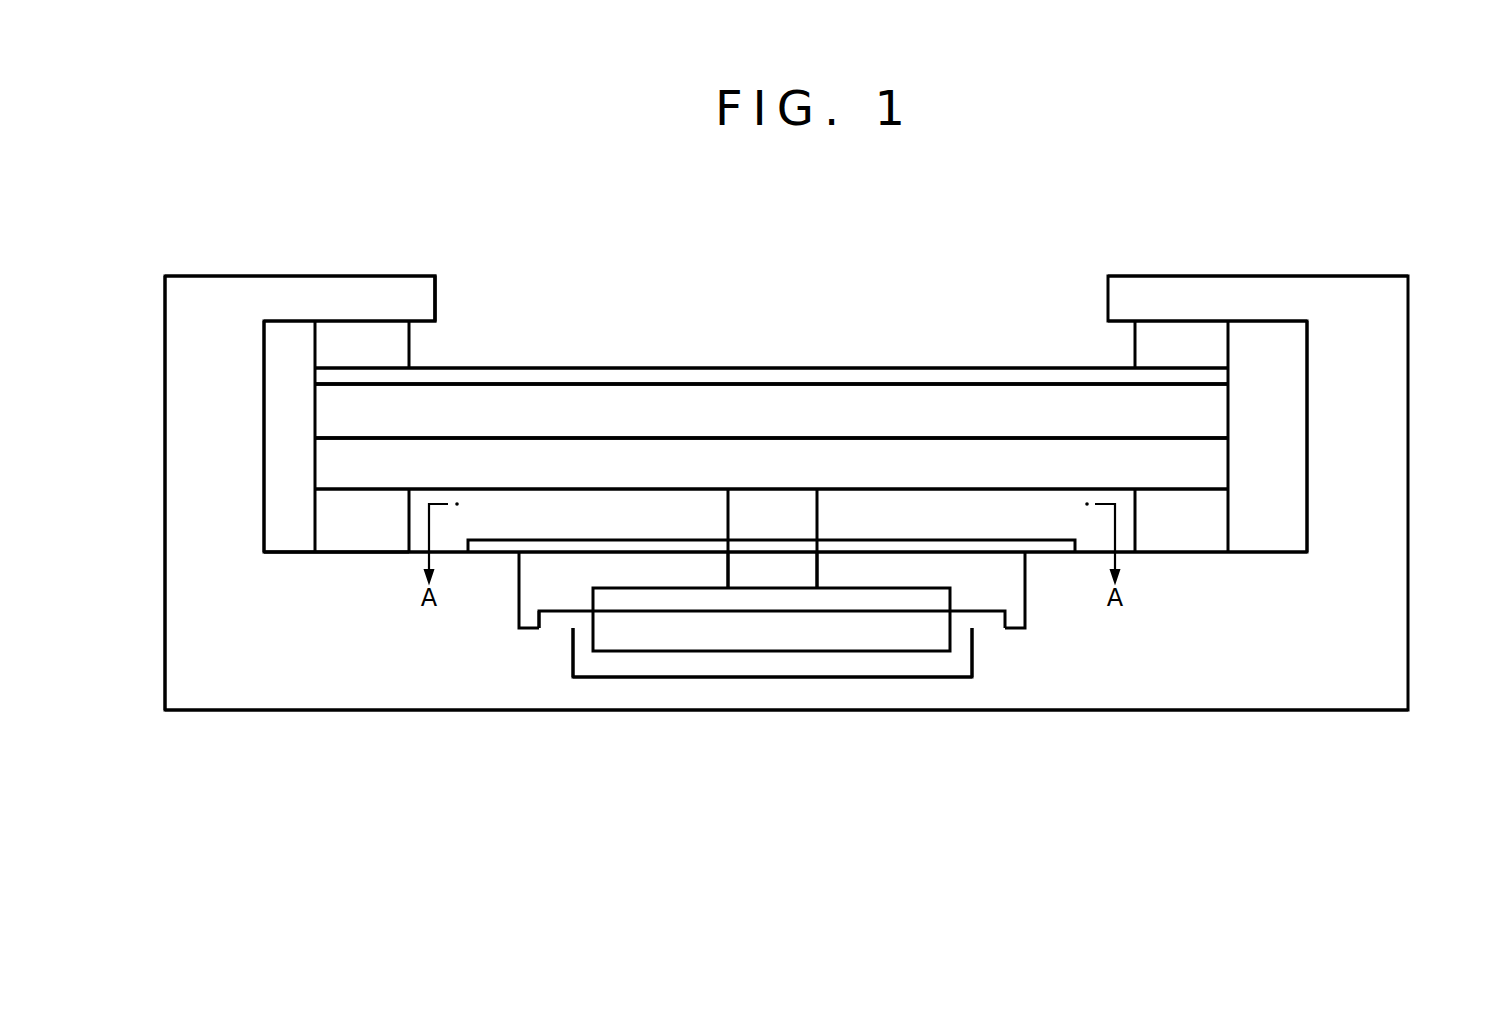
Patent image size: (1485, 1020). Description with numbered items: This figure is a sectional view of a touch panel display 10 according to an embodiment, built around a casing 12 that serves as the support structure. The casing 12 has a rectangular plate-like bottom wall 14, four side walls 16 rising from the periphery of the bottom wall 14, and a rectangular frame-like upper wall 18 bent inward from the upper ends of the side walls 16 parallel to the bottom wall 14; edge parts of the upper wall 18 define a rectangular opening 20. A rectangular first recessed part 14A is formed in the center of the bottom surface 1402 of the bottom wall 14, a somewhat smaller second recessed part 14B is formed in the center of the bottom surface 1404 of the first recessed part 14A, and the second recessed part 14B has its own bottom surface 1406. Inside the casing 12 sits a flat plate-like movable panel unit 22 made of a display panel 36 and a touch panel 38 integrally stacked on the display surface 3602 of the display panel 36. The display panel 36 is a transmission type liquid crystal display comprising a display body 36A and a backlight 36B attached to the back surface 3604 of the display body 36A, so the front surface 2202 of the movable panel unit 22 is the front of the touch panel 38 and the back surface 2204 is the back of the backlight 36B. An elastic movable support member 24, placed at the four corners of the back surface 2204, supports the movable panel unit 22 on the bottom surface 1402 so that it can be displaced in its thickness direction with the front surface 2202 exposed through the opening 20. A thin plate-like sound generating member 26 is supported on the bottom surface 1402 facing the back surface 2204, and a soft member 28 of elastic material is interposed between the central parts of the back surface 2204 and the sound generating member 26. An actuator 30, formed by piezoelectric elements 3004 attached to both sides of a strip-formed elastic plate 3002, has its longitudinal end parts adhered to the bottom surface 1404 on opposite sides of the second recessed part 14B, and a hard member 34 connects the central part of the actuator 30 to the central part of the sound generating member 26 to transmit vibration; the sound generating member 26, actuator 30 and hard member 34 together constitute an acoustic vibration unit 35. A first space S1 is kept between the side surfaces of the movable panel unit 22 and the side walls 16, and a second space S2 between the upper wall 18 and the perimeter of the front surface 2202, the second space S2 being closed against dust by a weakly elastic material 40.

The touch panel display 10 is at (284, 186).
The casing 12 is at (217, 272).
The bottom wall 14 is at (386, 683).
The bottom surface 1402 is at (351, 552).
The bottom surface 1404 is at (557, 628).
The bottom surface 1406 is at (737, 648).
The first recessed part 14A is at (519, 577).
The second recessed part 14B is at (572, 657).
The side walls 16 is at (224, 388).
The upper wall 18 is at (357, 297).
The opening 20 is at (437, 307).
The movable panel unit 22 is at (511, 364).
The front surface 2202 is at (583, 368).
The back surface 2204 is at (610, 488).
The movable support member 24 is at (333, 517).
The sound generating member 26 is at (1012, 553).
The soft member 28 is at (817, 505).
The actuator 30 is at (658, 660).
The elastic plate 3002 is at (959, 620).
The piezoelectric elements 3004 is at (893, 598).
The hard member 34 is at (817, 567).
The acoustic vibration unit 35 is at (978, 649).
The display panel 36 is at (809, 404).
The display body 36A is at (771, 411).
The backlight 36B is at (1023, 458).
The display surface 3602 is at (903, 383).
The back surface 3604 is at (950, 440).
The touch panel 38 is at (732, 368).
The elastic material 40 is at (1193, 345).
The first space S1 is at (1280, 403).
The second space S2 is at (1135, 345).